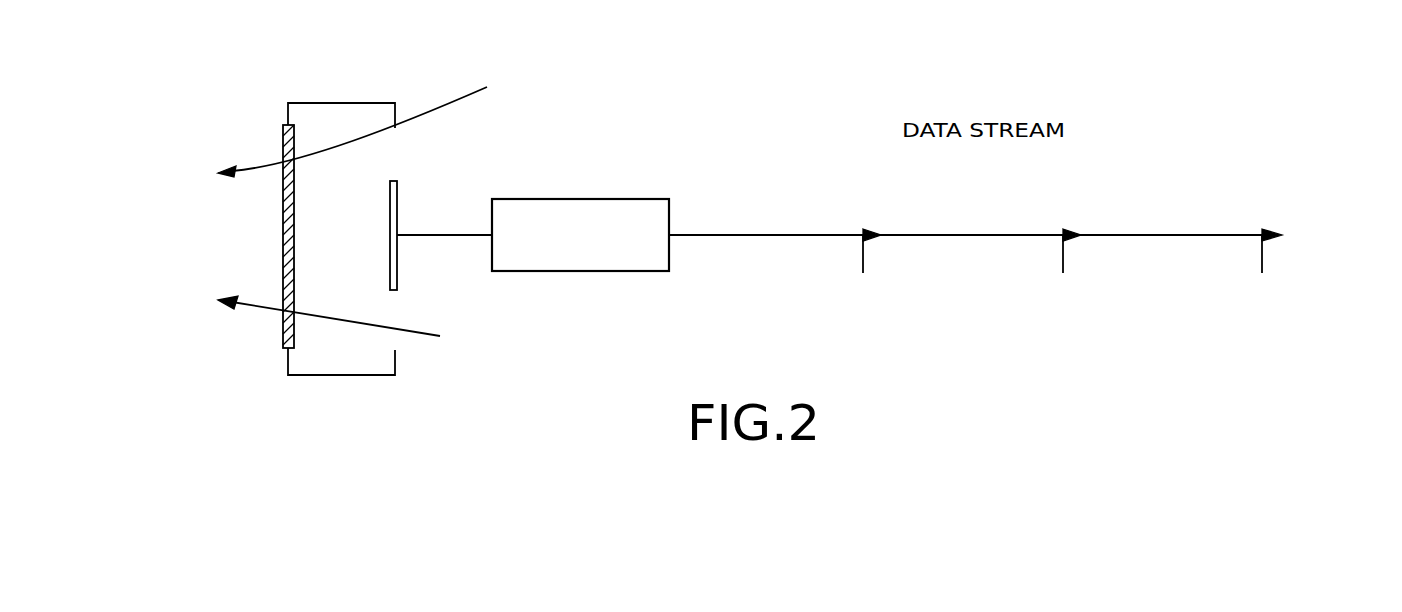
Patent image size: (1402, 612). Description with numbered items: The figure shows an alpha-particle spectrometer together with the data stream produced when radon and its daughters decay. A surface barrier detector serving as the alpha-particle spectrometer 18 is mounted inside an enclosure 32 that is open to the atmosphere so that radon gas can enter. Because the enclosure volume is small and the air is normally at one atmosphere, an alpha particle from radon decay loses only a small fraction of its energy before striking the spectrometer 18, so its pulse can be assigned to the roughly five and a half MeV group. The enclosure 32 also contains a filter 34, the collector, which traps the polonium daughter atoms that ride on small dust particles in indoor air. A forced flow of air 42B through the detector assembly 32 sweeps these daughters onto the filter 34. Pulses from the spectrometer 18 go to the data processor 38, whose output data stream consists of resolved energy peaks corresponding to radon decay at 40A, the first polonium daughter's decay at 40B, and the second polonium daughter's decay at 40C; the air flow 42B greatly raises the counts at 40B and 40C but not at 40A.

The alpha-particle spectrometer 18 is at (397, 200).
The enclosure 32 is at (355, 103).
The filter 34 is at (283, 323).
The data processor 38 is at (655, 199).
The resolved energy peak for Rn-222 40A is at (827, 202).
The resolved energy peak for Po-218 40B is at (1102, 200).
The resolved energy peak for Po-214 40C is at (1240, 202).
The forced flow of air 42B is at (253, 166).